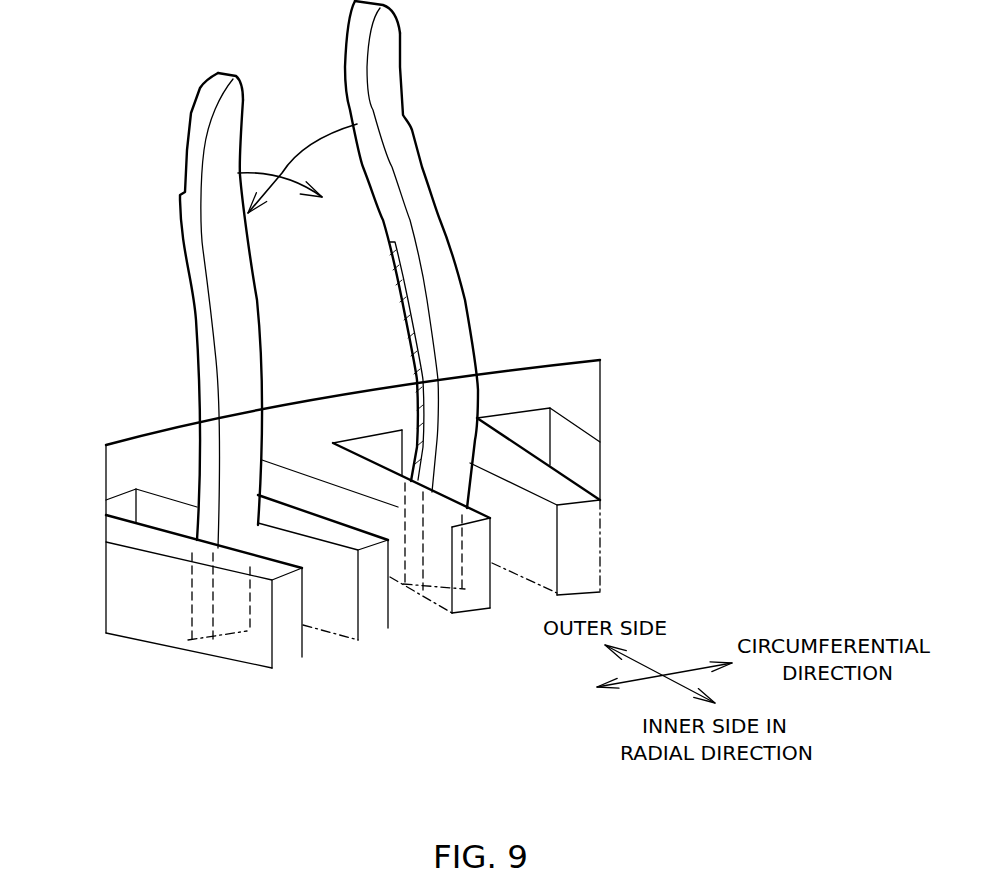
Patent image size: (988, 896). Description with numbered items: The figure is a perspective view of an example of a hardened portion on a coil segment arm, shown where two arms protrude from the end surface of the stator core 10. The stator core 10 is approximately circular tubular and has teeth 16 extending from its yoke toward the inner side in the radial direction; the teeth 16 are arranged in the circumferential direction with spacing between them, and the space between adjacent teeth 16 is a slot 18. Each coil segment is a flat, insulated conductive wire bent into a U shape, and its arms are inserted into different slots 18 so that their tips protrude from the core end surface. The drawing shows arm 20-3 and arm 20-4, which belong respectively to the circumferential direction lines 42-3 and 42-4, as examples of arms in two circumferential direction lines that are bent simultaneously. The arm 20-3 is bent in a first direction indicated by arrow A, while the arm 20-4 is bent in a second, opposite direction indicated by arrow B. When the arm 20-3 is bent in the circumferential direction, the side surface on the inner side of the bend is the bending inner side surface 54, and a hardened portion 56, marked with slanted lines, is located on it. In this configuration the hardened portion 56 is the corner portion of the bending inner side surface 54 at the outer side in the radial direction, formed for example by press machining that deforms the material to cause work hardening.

The stator core 10 is at (530, 355).
The teeth 16 is at (288, 650).
The slot 18 is at (313, 640).
The arm 20-3 is at (408, 150).
The arm 20-4 is at (195, 245).
The circumferential direction line 42-3 is at (592, 427).
The circumferential direction line 42-4 is at (165, 567).
The bending inner side surface 54 is at (386, 216).
The hardened portion 56 is at (408, 325).
The arrow A is at (282, 172).
The arrow B is at (293, 187).